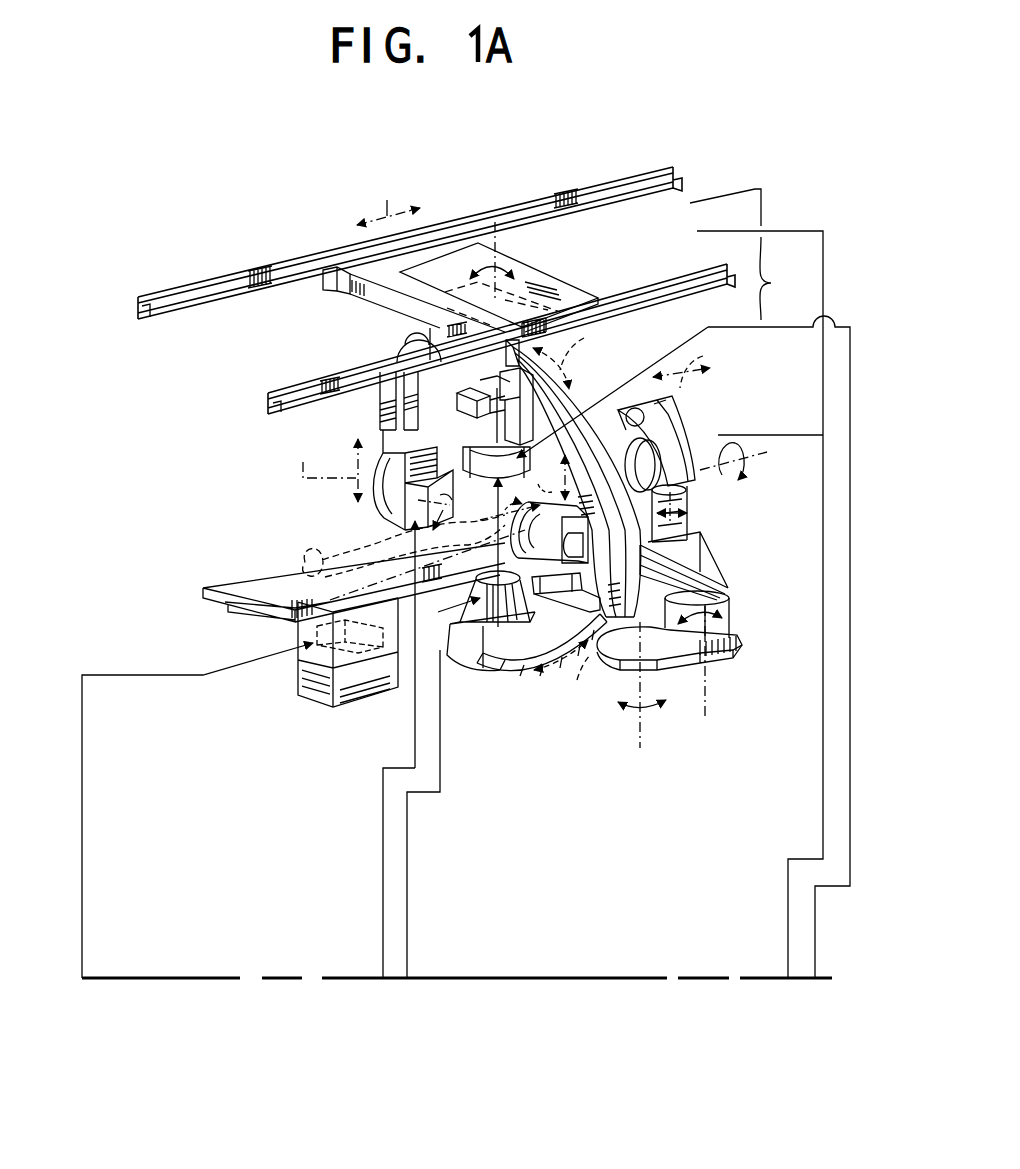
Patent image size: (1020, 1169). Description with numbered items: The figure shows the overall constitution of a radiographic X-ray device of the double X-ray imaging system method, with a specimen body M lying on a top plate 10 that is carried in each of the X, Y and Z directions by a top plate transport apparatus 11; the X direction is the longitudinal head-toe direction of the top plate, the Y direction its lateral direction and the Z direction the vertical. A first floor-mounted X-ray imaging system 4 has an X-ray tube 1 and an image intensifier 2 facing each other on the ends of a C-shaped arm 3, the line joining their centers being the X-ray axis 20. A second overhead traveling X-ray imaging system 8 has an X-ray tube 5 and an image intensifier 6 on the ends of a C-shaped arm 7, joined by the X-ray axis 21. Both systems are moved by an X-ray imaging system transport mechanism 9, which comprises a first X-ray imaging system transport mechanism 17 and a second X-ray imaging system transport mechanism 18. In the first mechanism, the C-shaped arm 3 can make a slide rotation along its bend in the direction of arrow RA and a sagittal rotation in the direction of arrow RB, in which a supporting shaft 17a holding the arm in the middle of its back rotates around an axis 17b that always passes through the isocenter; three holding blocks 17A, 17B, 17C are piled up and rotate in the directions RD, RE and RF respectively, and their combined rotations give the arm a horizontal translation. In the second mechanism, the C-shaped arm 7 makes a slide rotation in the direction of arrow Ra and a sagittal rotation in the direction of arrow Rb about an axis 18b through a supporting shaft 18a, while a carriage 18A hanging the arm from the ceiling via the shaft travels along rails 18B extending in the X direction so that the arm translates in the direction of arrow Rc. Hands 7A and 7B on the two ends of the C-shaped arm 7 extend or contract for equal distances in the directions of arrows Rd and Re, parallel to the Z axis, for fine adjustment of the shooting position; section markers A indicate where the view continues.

The X-ray tube 1 is at (482, 668).
The image intensifier (I.I. tube) 2 is at (478, 390).
The C-shaped arm 3 is at (607, 626).
The first X-ray imaging system 4 is at (446, 630).
The X-ray tube 5 is at (378, 513).
The image intensifier (I.I. tube) 6 is at (648, 548).
The C-shaped arm 7 is at (582, 402).
The hand 7A is at (388, 390).
The hand 7B is at (712, 574).
The second X-ray imaging system 8 is at (366, 432).
The X-ray imaging system transport mechanism 9 is at (683, 583).
The top plate 10 is at (234, 588).
The top plate transport apparatus 11 is at (307, 642).
The first X-ray imaging system transport mechanism 17 is at (762, 330).
The holding block 17A is at (676, 640).
The holding block 17B is at (733, 590).
The holding block 17C is at (652, 403).
The supporting shaft 17a is at (684, 488).
The axis 17b is at (752, 464).
The second X-ray imaging system transport mechanism 18 is at (697, 231).
The carriage 18A is at (360, 285).
The rails 18B is at (212, 284).
The supporting shaft 18a is at (392, 338).
The axis 18b is at (500, 240).
The X-ray axis 20 is at (520, 664).
The X-ray axis 21 is at (466, 463).
The specimen body M is at (305, 548).
The X direction X is at (426, 629).
The Y direction Y is at (486, 538).
The Z direction Z is at (435, 558).
The slide rotation direction (arrow) Ra is at (572, 356).
The sagittal rotation direction (arrow) Rb is at (478, 288).
The translation direction (arrow) Rc is at (388, 192).
The hand extension direction (arrow) Rd is at (321, 470).
The hand extension direction (arrow) Re is at (535, 482).
The slide rotation direction (arrow) RA is at (563, 670).
The sagittal rotation direction (arrow) RB is at (740, 496).
The rotation direction of holding block 17A (arrow) RD is at (648, 724).
The rotation direction of holding block 17B (arrow) RE is at (718, 642).
The rotation direction of holding block 17C (arrow) RF is at (690, 533).
The section line A- A is at (450, 979).